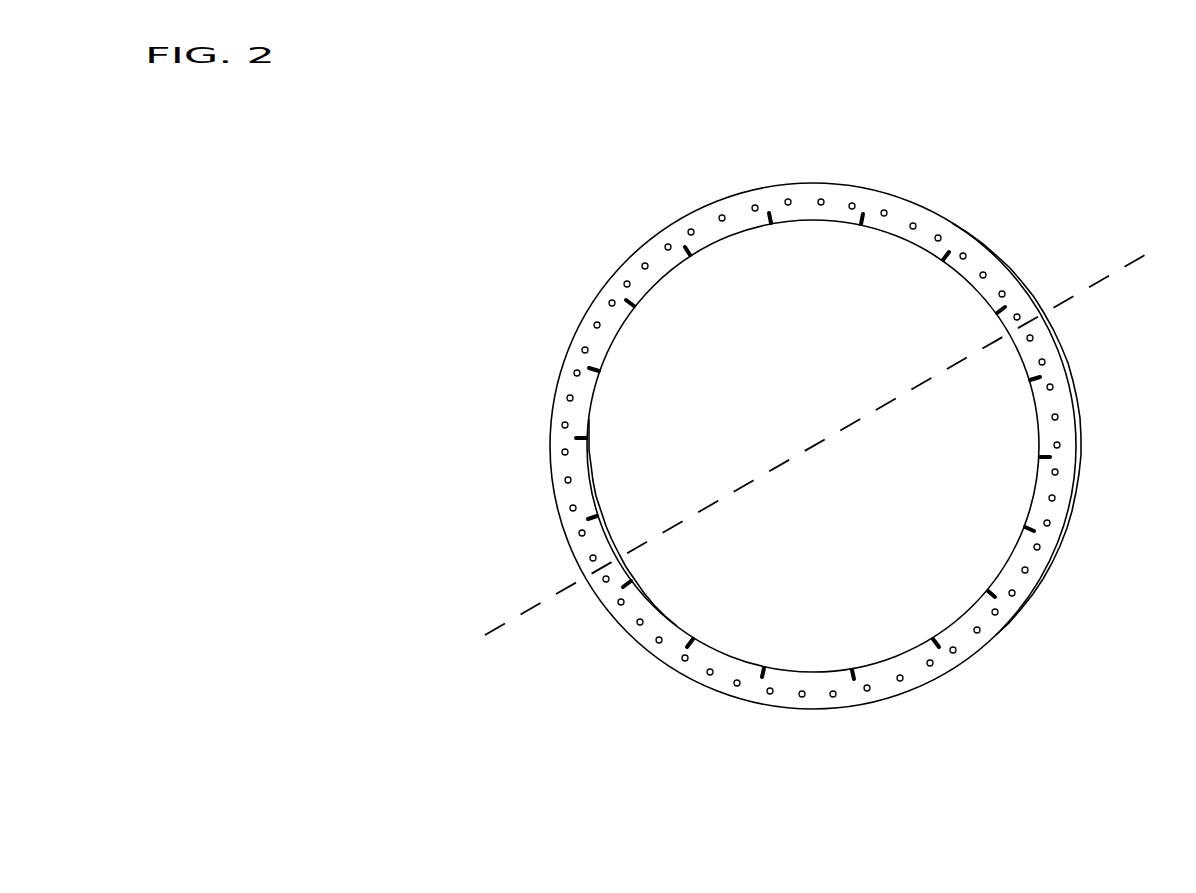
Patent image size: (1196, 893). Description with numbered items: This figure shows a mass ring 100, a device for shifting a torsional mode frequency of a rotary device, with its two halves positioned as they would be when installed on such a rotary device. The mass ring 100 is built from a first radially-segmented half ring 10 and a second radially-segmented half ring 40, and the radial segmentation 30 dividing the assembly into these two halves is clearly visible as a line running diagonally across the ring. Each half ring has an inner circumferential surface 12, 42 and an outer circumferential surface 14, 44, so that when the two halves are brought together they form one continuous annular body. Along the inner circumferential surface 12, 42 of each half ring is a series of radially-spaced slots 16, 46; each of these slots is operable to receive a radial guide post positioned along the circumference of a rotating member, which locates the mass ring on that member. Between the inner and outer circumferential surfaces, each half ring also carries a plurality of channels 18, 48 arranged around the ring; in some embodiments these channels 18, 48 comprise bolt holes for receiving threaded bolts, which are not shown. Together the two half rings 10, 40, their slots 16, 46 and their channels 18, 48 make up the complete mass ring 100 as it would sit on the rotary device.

The mass ring 100 is at (1038, 242).
The first radially-segmented half ring 10 is at (533, 353).
The inner circumferential surface 12 is at (613, 343).
The outer circumferential surface 14 is at (615, 273).
The radially-spaced slots 16 is at (770, 217).
The channels 18 is at (755, 208).
The radial segmentation 30 is at (527, 605).
The second radially-segmented half ring 40 is at (615, 645).
The inner circumferential surface 42 is at (892, 658).
The outer circumferential surface 44 is at (705, 690).
The radially-spaced slots 46 is at (935, 643).
The channels 48 is at (868, 688).